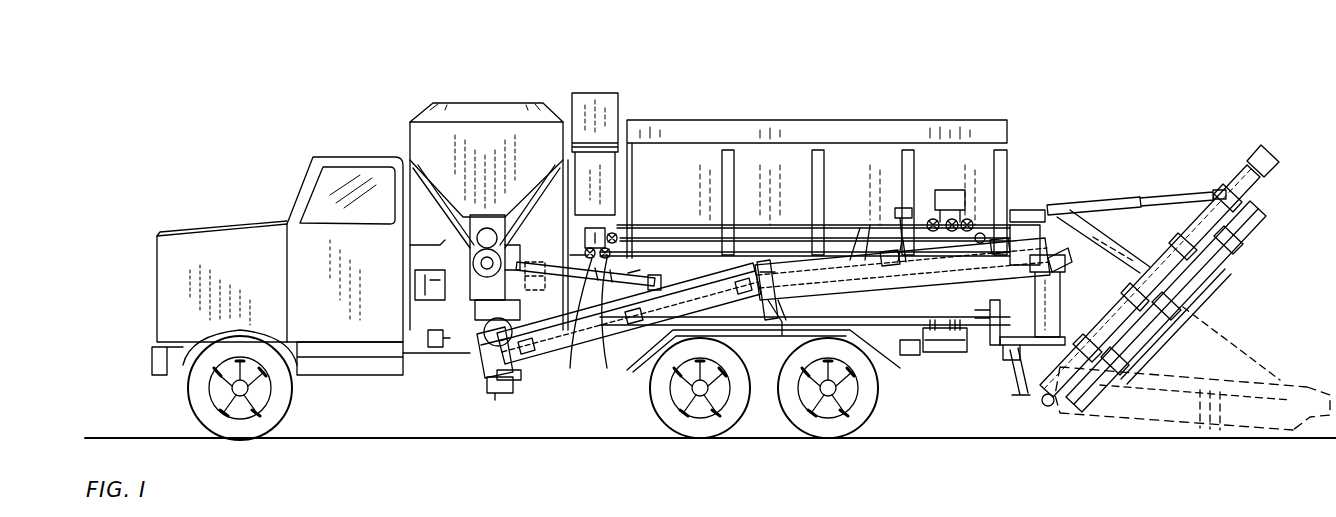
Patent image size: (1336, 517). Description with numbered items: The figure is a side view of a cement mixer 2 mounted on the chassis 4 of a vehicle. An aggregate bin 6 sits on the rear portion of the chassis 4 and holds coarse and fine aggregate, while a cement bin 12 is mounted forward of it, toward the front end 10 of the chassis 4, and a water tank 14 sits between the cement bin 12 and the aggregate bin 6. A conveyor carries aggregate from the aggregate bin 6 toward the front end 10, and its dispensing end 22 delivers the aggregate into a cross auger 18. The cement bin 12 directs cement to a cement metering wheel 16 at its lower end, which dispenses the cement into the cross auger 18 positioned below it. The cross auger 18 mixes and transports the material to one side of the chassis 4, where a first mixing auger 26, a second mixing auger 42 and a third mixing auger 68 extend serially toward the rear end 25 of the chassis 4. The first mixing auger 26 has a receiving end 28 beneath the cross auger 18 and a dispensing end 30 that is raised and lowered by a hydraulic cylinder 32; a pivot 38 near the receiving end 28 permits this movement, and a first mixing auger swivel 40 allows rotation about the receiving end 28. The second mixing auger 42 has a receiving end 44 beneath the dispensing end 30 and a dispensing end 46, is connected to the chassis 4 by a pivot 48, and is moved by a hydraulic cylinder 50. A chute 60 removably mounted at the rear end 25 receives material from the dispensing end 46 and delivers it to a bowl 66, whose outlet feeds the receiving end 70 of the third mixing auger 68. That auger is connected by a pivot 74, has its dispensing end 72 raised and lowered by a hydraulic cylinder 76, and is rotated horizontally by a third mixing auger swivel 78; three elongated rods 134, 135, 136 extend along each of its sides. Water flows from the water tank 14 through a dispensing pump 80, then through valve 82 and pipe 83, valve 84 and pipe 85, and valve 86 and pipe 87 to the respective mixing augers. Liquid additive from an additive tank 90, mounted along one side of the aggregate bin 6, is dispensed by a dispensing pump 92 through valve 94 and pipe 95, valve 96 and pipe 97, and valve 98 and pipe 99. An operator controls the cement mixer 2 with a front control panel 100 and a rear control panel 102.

The cement mixer 2 is at (376, 125).
The chassis 4 is at (422, 365).
The aggregate bin 6 is at (775, 122).
The front end 10 is at (408, 368).
The cement bin 12 is at (483, 103).
The water tank 14 is at (595, 93).
The cement metering wheel 16 is at (458, 242).
The cross auger 18 is at (450, 345).
The dispensing end of the conveyor 22 is at (470, 262).
The rear end of the chassis 25 is at (978, 332).
The first mixing auger 26 is at (540, 362).
The receiving end of the first mixing auger 28 is at (485, 372).
The dispensing end of the first mixing auger 30 is at (768, 316).
The hydraulic cylinder 32 is at (510, 225).
The pivot 38 is at (513, 380).
The first mixing auger swivel 40 is at (500, 394).
The second mixing auger 42 is at (945, 284).
The receiving end of the second mixing auger 44 is at (782, 335).
The dispensing end of the second mixing auger 46 is at (1052, 262).
The pivot 48 is at (818, 262).
The hydraulic cylinder 50 is at (862, 228).
The chute 60 is at (1062, 305).
The bowl 66 is at (1015, 360).
The third mixing auger 68 is at (1228, 242).
The receiving end of the third mixing auger 70 is at (1050, 406).
The dispensing end of the third mixing auger 72 is at (1255, 175).
The pivot 74 is at (1018, 395).
The hydraulic cylinder 76 is at (1125, 202).
The third mixing auger swivel 78 is at (1010, 345).
The dispensing pump 80 is at (605, 238).
The valve 82 is at (590, 250).
The pipe 83 is at (570, 368).
The valve 84 is at (607, 368).
The pipe 85 is at (705, 250).
The valve 86 is at (617, 238).
The pipe 87 is at (770, 238).
The additive tank 90 is at (952, 219).
The dispensing pump 92 is at (975, 222).
The valve 94 is at (934, 212).
The pipe 95 is at (858, 225).
The valve 96 is at (967, 219).
The pipe 97 is at (945, 252).
The valve 98 is at (985, 233).
The pipe 99 is at (1085, 262).
The front control panel 100 is at (420, 296).
The rear control panel 102 is at (945, 352).
The elongated rod 134 is at (1130, 372).
The elongated rod 135 is at (1182, 282).
The elongated rod 136 is at (1335, 280).